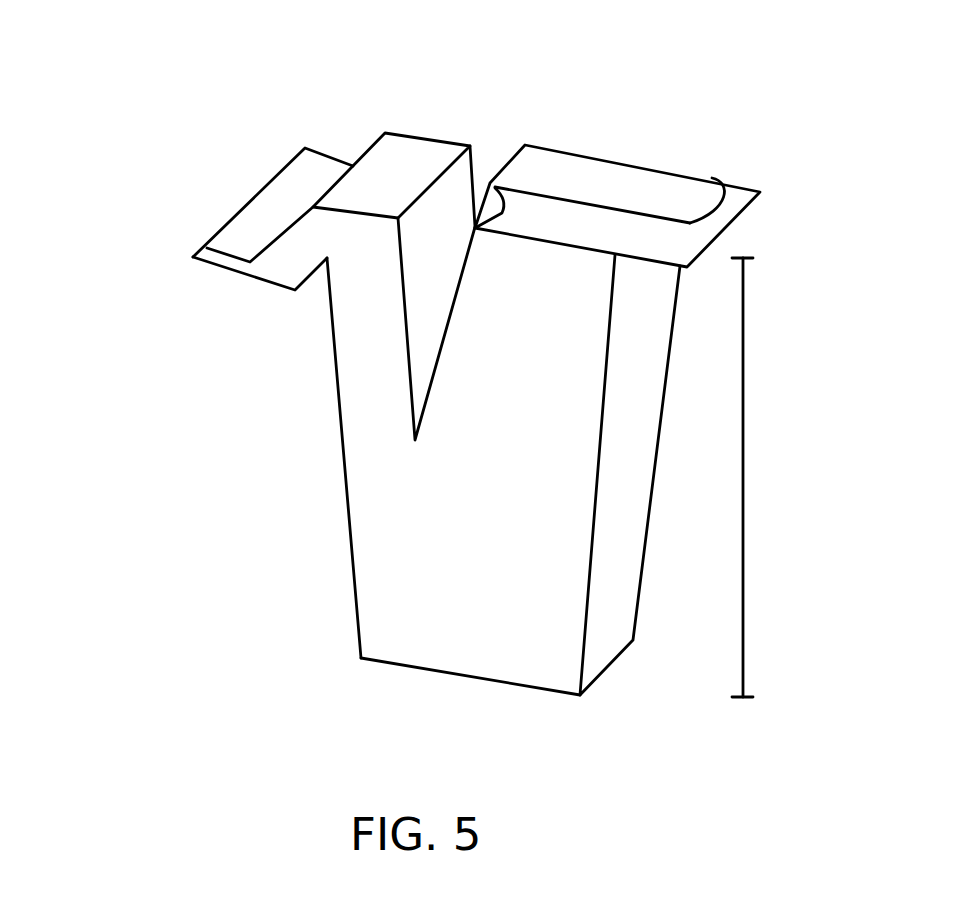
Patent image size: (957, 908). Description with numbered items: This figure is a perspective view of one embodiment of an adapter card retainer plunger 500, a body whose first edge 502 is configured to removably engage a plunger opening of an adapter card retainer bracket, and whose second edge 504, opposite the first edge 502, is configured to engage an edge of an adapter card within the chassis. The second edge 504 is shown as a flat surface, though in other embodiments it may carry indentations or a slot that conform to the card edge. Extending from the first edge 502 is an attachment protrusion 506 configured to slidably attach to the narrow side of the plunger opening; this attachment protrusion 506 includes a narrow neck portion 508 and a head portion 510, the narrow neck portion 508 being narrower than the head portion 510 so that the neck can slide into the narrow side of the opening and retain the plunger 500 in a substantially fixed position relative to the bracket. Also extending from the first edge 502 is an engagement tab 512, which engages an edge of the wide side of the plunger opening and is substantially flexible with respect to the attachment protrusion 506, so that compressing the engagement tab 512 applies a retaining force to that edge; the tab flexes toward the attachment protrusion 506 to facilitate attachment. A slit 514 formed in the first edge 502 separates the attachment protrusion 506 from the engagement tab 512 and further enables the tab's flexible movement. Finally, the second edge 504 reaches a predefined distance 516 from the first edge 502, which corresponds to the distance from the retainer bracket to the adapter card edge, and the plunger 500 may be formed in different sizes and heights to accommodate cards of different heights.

The adapter card retainer plunger 500 is at (88, 113).
The first edge 502 is at (552, 150).
The second edge 504 is at (437, 672).
The attachment protrusion 506 is at (663, 180).
The narrow neck portion 508 is at (697, 238).
The head portion 510 is at (720, 183).
The engagement tab 512 is at (378, 168).
The slit 514 is at (432, 313).
The predefined distance 516 is at (743, 515).